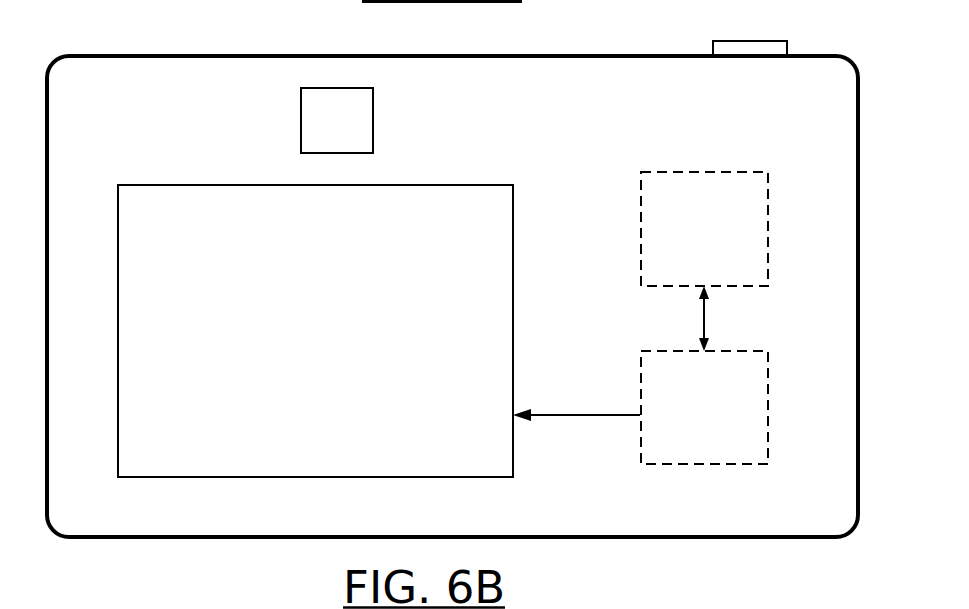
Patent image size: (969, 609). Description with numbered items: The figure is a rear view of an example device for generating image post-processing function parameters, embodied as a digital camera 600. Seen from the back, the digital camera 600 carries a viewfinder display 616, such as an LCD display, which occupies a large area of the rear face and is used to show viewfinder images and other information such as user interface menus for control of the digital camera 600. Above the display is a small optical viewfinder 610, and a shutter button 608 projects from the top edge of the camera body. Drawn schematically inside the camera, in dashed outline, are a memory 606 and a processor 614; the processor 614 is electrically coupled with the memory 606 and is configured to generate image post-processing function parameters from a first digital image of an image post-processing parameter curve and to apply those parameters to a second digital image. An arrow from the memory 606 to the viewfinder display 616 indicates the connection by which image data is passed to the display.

The digital camera 600 is at (452, 296).
The memory 606 is at (704, 407).
The shutter button 608 is at (749, 30).
The optical viewfinder 610 is at (337, 120).
The processor 614 is at (704, 229).
The viewfinder display 616 is at (315, 331).